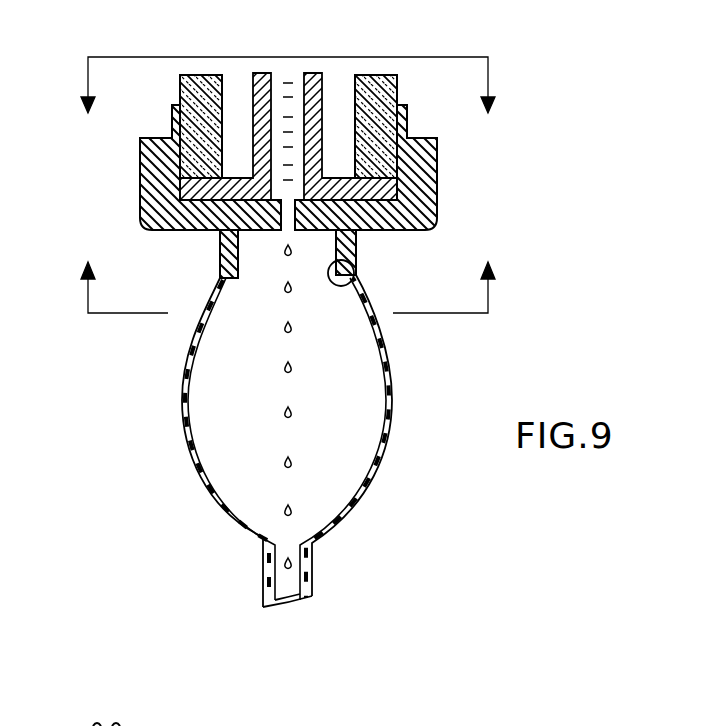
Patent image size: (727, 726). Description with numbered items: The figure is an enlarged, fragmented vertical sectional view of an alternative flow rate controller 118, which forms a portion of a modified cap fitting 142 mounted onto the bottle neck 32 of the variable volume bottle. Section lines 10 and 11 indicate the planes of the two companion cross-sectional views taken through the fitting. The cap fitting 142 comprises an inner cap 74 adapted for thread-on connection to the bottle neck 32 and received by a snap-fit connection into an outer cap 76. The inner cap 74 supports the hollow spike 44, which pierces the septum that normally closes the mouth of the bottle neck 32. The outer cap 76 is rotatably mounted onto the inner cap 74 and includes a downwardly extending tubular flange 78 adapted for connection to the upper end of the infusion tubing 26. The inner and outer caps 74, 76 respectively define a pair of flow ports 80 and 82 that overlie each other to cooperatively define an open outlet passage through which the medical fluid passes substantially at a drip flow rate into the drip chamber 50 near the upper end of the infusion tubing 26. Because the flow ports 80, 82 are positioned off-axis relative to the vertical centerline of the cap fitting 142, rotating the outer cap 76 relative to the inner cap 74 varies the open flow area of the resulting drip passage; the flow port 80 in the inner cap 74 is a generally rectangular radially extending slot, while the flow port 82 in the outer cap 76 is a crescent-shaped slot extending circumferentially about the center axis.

The section line 10- 10 is at (291, 68).
The section line 11- 11 is at (292, 302).
The infusion tubing 26 is at (313, 568).
The bottle neck 32 is at (203, 75).
The hollow spike 44 is at (272, 73).
The drip chamber 50 is at (390, 448).
The inner cap 74 is at (167, 185).
The outer cap 76 is at (160, 224).
The tubular flange 78 is at (358, 277).
The flow port 80 is at (323, 162).
The flow port 82 is at (293, 190).
The flow rate controller 118 is at (114, 214).
The cap fitting 142 is at (445, 170).